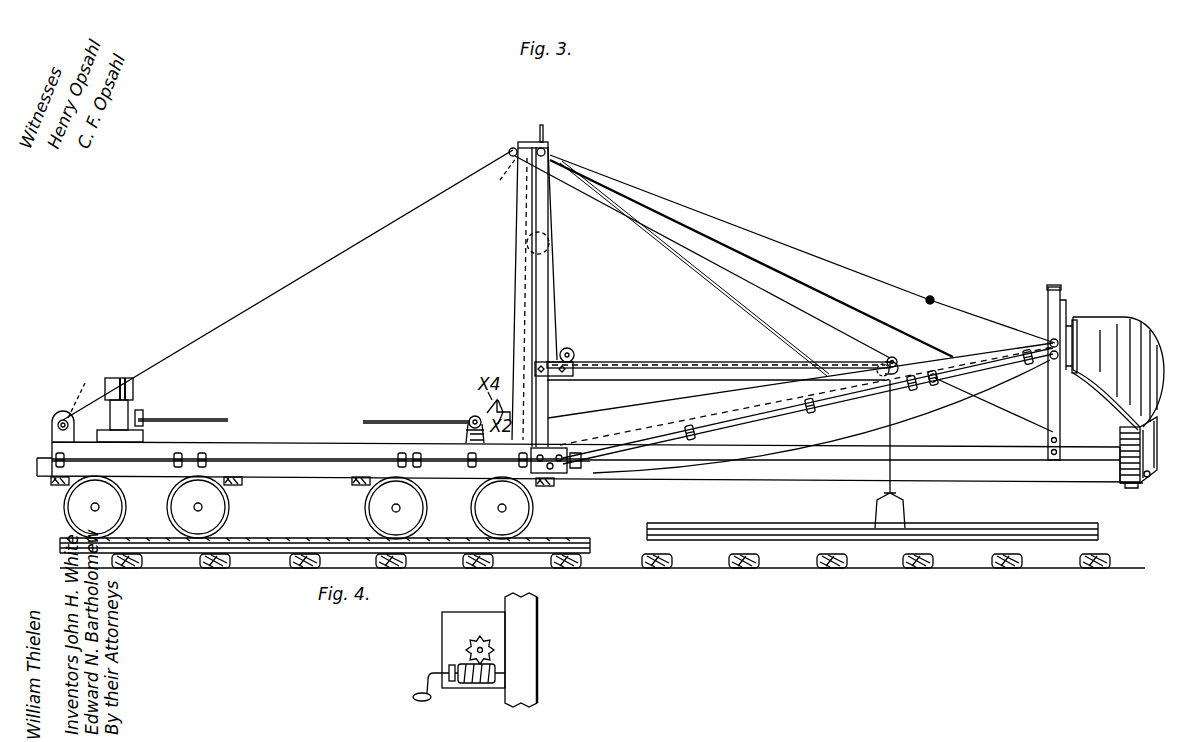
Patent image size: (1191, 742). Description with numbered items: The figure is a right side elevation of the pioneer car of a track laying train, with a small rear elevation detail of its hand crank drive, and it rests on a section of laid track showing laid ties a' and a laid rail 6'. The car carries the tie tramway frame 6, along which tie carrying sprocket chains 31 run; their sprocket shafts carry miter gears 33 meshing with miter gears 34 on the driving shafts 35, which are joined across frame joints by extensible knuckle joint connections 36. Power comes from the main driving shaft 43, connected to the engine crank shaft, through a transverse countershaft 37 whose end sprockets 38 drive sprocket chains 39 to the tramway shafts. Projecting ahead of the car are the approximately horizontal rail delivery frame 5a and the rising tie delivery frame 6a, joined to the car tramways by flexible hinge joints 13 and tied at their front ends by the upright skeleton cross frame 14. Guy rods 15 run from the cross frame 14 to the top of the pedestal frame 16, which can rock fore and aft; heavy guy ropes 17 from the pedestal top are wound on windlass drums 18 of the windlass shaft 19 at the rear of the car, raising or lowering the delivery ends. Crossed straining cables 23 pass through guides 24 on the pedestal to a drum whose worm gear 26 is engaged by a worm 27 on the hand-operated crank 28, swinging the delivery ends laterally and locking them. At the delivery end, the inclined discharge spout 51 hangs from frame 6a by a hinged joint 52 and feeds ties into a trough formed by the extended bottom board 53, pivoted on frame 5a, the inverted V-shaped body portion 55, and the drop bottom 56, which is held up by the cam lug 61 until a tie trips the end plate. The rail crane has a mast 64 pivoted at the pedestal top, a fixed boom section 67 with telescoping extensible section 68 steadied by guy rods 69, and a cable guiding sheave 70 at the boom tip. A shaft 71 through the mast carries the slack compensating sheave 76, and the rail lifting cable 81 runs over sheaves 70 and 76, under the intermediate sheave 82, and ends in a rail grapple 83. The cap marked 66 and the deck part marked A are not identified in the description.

In FIG. 3, the tramway frame for ties 6 is at (588, 475).
In FIG. 3, the tie delivery tramway frame 6a is at (998, 364).
In FIG. 3, the laid rail 6' is at (579, 524).
In FIG. 3, the laid ties a' is at (602, 580).
In FIG. 3, the rail delivery tramway frame 5a is at (1020, 462).
In FIG. 3, the flexible hinge joints 13 is at (558, 448).
In FIG. 3, the upright skeleton cross frame 14 is at (1061, 300).
In FIG. 3, the guy rods 15 is at (845, 268).
In FIG. 3, the pedestal frame 16 is at (520, 238).
In FIG. 4, the pedestal frame 16 is at (522, 680).
In FIG. 3, the guy ropes 17 is at (298, 280).
In FIG. 3, the windlass drums 18 is at (82, 390).
In FIG. 3, the windlass shaft 19 is at (62, 418).
In FIG. 3, the crossed straining cables 23 is at (514, 322).
In FIG. 3, the guides 24 is at (492, 180).
In FIG. 4, the worm gear 26 is at (484, 648).
In FIG. 4, the worm 27 is at (478, 683).
In FIG. 3, the hand-operated crank 28 is at (487, 413).
In FIG. 4, the hand-operated crank 28 is at (423, 693).
In FIG. 3, the tie carrying sprocket chains 31 is at (742, 472).
In FIG. 3, the miter gears 33 is at (690, 425).
In FIG. 3, the miter gears 34 is at (175, 463).
In FIG. 3, the driving shafts 35 is at (233, 458).
In FIG. 3, the knuckle joint connections 36 is at (562, 483).
In FIG. 3, the transverse countershaft 37 is at (466, 424).
In FIG. 3, the sprockets 38 is at (470, 418).
In FIG. 3, the sprocket chains 39 is at (468, 438).
In FIG. 3, the main driving shaft 43 is at (212, 419).
In FIG. 3, the inclined discharge spout 51 is at (1125, 345).
In FIG. 3, the hinged joint 52 is at (1080, 322).
In FIG. 3, the extended bottom board 53 is at (1136, 488).
In FIG. 3, the inverted V-shaped body portion 55 is at (1122, 430).
In FIG. 3, the drop bottom 56 is at (1152, 448).
In FIG. 3, the cam lug 61 is at (1150, 478).
In FIG. 3, the mast 64 is at (556, 318).
In FIG. 3, the top sheaves 66 is at (548, 146).
In FIG. 3, the boom section 67 is at (650, 370).
In FIG. 3, the extensible boom section 68 is at (870, 366).
In FIG. 3, the guy rods 69 is at (738, 305).
In FIG. 3, the cable guiding sheave 70 is at (898, 361).
In FIG. 3, the shaft 71 is at (540, 130).
In FIG. 3, the slack compensating sheave 76 is at (549, 246).
In FIG. 3, the rail lifting cable 81 is at (505, 378).
In FIG. 3, the intermediate sheave 82 is at (574, 352).
In FIG. 3, the rail grapple 83 is at (878, 518).
In FIG. 3, the engine A is at (133, 396).